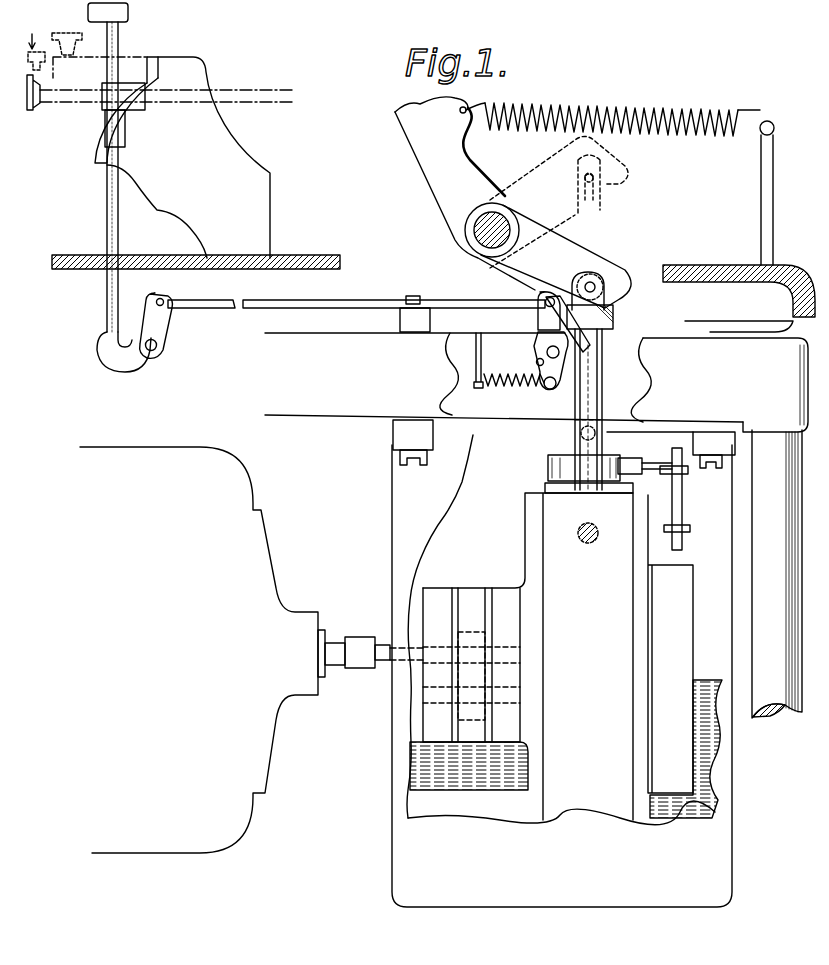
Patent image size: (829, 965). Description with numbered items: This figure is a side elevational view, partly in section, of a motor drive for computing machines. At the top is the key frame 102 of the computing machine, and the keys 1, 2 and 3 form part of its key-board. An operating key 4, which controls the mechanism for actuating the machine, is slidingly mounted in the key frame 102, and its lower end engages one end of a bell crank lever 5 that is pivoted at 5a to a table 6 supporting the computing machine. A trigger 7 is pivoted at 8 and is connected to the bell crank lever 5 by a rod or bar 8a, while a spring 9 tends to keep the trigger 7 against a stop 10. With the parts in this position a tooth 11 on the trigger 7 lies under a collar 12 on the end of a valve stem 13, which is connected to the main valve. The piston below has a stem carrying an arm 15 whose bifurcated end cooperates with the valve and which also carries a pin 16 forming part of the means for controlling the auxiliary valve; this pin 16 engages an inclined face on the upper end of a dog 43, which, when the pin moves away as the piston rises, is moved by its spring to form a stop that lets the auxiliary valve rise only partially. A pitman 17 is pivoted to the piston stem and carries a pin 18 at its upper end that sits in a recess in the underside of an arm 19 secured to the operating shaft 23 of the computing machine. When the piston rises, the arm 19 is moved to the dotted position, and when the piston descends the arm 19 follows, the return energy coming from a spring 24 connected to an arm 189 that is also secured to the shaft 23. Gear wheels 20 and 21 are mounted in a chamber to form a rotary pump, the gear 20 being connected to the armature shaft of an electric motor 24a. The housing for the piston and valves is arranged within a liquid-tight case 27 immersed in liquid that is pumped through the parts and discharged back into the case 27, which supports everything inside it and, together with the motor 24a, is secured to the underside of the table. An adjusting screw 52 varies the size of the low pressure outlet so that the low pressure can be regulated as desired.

The key 1 is at (33, 44).
The key 2 is at (58, 33).
The key 3 is at (31, 112).
The operating key 4 is at (121, 39).
The key frame 102 is at (182, 157).
The bell crank lever 5 is at (137, 366).
The pivot 5a is at (157, 345).
The rod or bar 8a is at (307, 305).
The table 6 is at (318, 415).
The spring 24 is at (606, 116).
The arm 189 is at (465, 193).
The operating shaft 23 is at (474, 229).
The arm 19 is at (556, 222).
The pin 18 is at (593, 283).
The pitman 17 is at (605, 299).
The collar 12 is at (614, 322).
The tooth 11 is at (586, 348).
The trigger 7 is at (549, 391).
The pivot 8 is at (547, 352).
The stop 10 is at (536, 363).
The spring 9 is at (505, 390).
The valve stem 13 is at (603, 399).
The arm 15 is at (548, 468).
The pin 16 is at (648, 461).
The dog 43 is at (682, 494).
The adjusting screw 52 is at (578, 533).
The gear wheel 20 is at (467, 632).
The gear wheel 21 is at (458, 722).
The electric motor 24a is at (211, 638).
The liquid-tight case 27 is at (562, 676).